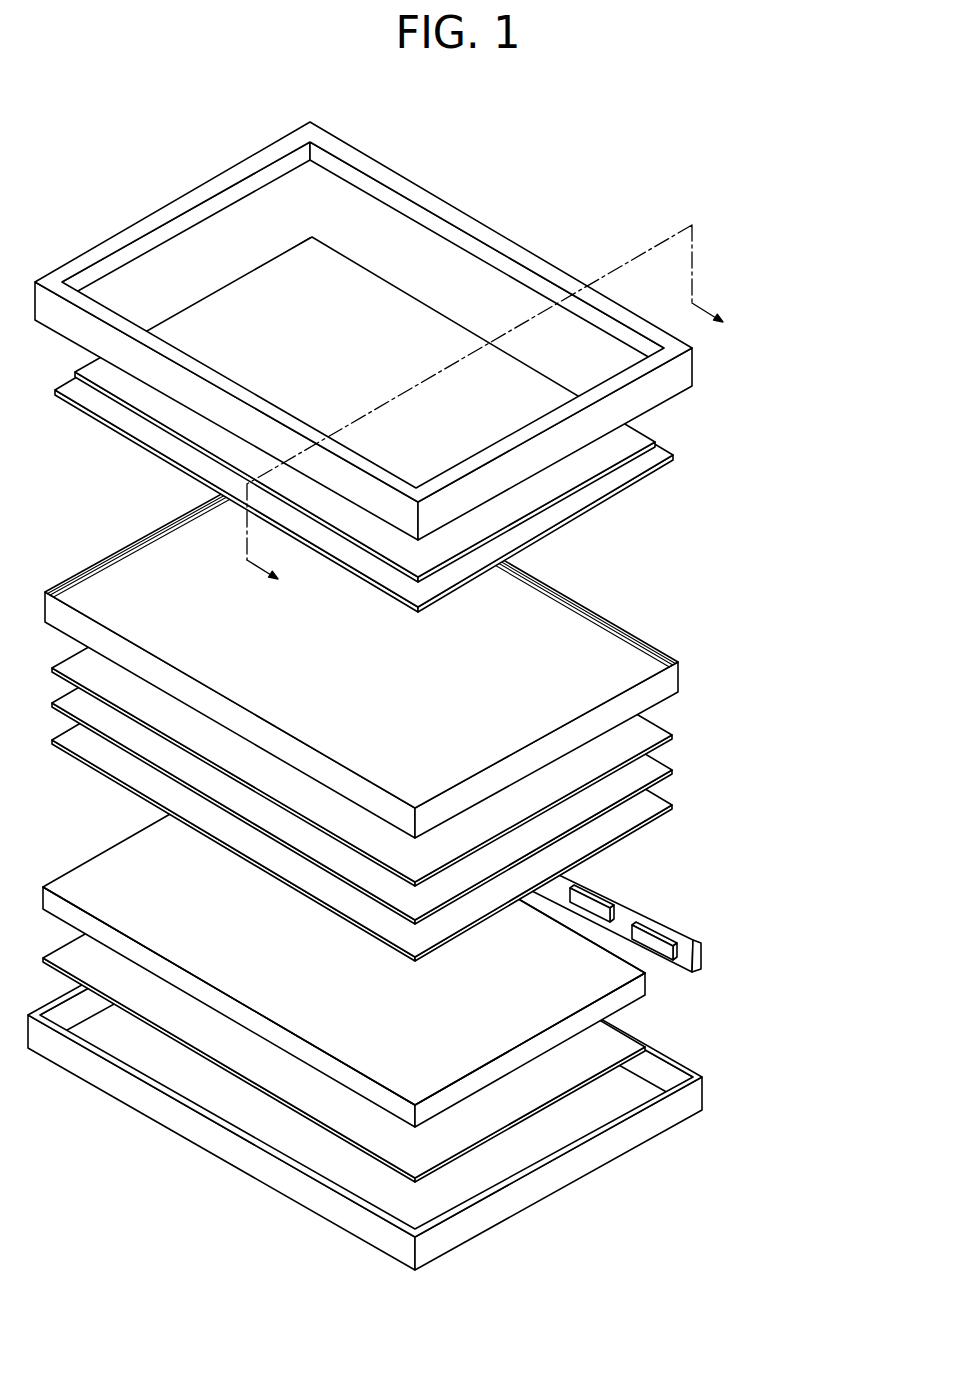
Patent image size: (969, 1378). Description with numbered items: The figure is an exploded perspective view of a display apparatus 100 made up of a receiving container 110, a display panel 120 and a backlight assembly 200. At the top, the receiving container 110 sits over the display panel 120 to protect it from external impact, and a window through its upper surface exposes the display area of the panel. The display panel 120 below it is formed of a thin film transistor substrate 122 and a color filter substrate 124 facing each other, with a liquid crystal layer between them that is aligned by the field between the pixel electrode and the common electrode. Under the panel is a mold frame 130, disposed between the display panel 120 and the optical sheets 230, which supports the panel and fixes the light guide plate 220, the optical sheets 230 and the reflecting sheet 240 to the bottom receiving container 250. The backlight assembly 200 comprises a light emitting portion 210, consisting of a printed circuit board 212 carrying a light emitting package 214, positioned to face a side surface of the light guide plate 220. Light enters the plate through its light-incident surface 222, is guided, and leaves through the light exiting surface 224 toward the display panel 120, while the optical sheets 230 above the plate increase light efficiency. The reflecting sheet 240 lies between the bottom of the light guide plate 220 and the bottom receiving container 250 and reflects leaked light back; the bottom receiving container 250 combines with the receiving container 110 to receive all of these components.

The display apparatus 100 is at (530, 193).
The receiving container 110 is at (690, 365).
The display panel 120 is at (409, 424).
The thin film transistor substrate 122 is at (592, 491).
The color filter substrate 124 is at (599, 456).
The mold frame 130 is at (700, 650).
The backlight assembly 200 is at (429, 895).
The light emitting portion 210 is at (653, 906).
The printed circuit board 212 is at (699, 953).
The light emitting package 214 is at (588, 901).
The light guide plate 220 is at (393, 981).
The light-incident surface 222 is at (641, 961).
The light exiting surface 224 is at (502, 1010).
The optical sheets 230 is at (392, 741).
The reflecting sheet 240 is at (472, 1118).
The bottom receiving container 250 is at (694, 1097).